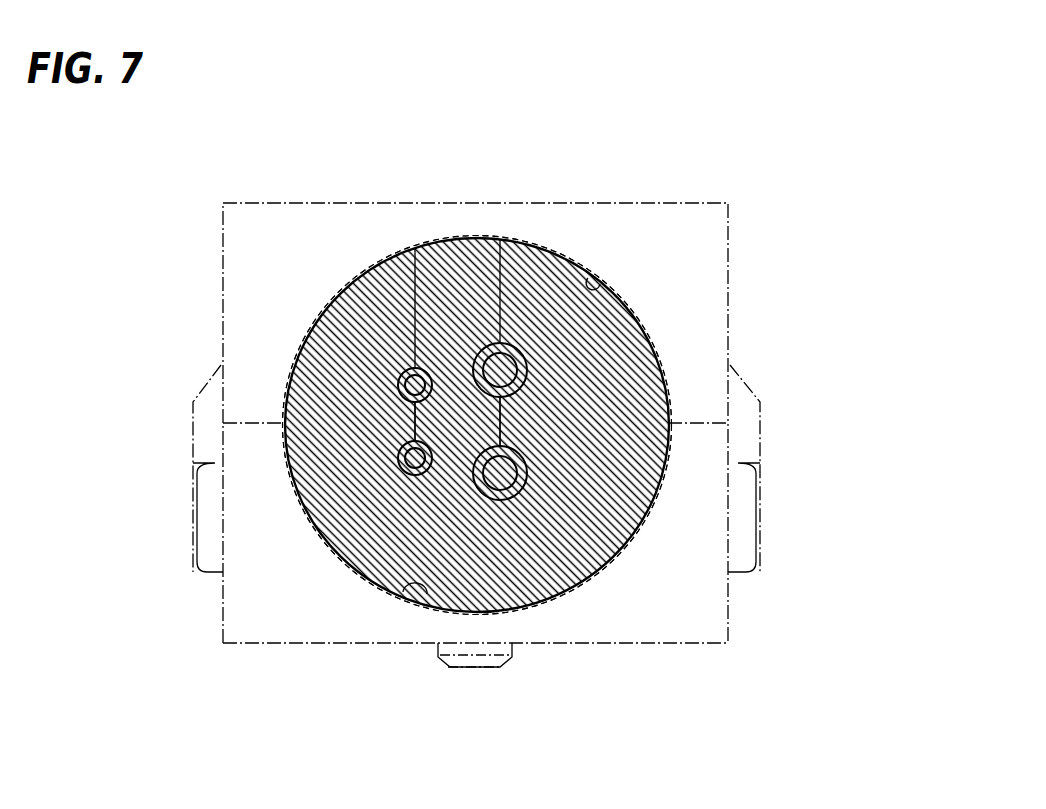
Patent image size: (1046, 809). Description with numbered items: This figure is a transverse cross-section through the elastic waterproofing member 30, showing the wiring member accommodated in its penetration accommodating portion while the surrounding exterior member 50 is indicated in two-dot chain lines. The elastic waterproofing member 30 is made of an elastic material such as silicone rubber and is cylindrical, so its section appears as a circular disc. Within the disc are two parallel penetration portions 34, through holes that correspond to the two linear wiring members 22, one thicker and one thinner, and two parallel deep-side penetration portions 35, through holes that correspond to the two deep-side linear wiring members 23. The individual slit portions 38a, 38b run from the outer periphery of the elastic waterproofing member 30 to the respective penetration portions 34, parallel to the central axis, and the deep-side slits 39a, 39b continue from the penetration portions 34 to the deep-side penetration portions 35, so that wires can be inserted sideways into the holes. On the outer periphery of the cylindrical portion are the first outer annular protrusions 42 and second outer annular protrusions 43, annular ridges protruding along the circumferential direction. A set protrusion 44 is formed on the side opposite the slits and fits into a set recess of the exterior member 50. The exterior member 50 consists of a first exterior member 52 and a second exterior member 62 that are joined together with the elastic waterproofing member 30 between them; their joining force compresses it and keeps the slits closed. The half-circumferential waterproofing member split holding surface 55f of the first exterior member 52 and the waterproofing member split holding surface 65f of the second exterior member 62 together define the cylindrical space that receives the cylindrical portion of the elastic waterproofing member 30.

The linear wiring members 22 is at (518, 350).
The deep-side linear wiring members 23 is at (508, 500).
The elastic waterproofing member 30 is at (457, 235).
The penetration portions 34 is at (525, 363).
The deep-side penetration portions 35 is at (523, 486).
The individual slit portion 38a is at (503, 265).
The individual slit portion 38b is at (400, 252).
The deep-side slit 39a is at (507, 417).
The deep-side slit 39b is at (413, 414).
The first outer annular protrusions 42 is at (645, 324).
The second outer annular protrusions 43 is at (645, 324).
The set protrusion 44 is at (503, 668).
The exterior member 50 is at (689, 190).
The first exterior member 52 is at (730, 627).
The waterproofing member split holding surface 55f is at (403, 592).
The second exterior member 62 is at (735, 225).
The waterproofing member split holding surface 65f is at (588, 278).